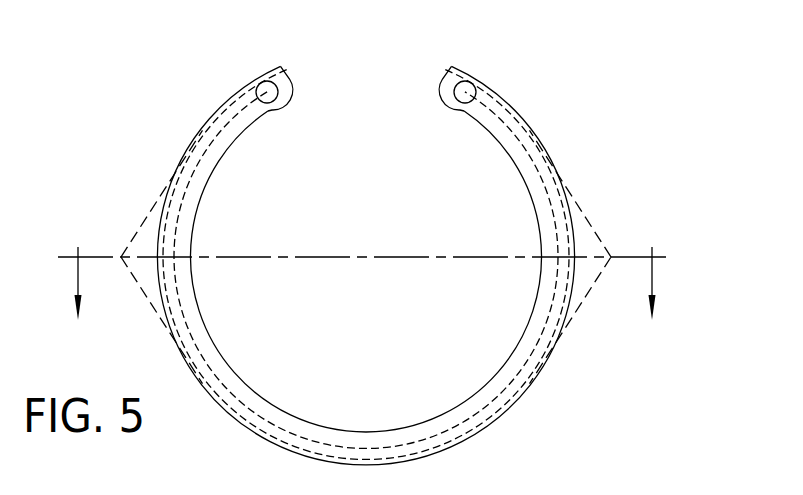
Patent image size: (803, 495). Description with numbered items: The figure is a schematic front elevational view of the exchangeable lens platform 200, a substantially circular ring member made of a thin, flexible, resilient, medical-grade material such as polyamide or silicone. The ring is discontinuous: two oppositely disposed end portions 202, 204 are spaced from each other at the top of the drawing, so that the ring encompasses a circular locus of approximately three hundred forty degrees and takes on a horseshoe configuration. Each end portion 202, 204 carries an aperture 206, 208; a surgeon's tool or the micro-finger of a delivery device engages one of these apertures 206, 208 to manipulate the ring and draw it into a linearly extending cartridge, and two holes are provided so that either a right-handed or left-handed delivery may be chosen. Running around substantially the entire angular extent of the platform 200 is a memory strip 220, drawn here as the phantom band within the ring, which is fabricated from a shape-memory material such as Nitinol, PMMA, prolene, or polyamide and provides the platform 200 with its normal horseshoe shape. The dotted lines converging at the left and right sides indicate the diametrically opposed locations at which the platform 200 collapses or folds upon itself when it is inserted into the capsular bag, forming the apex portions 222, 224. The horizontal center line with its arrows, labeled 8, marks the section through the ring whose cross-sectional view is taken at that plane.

The exchangeable lens platform 200 is at (385, 232).
The end portion 202 is at (288, 73).
The end portion 204 is at (446, 73).
The aperture 206 is at (263, 88).
The aperture 208 is at (468, 87).
The memory strip 220 is at (358, 450).
The apex portion 222 is at (123, 261).
The apex portion 224 is at (611, 258).
The section line 8- 8 is at (364, 285).